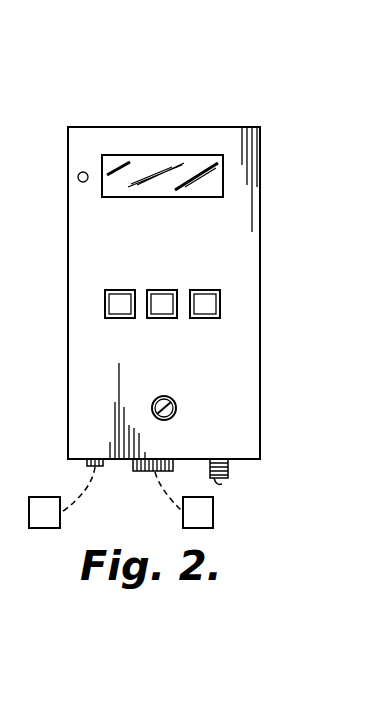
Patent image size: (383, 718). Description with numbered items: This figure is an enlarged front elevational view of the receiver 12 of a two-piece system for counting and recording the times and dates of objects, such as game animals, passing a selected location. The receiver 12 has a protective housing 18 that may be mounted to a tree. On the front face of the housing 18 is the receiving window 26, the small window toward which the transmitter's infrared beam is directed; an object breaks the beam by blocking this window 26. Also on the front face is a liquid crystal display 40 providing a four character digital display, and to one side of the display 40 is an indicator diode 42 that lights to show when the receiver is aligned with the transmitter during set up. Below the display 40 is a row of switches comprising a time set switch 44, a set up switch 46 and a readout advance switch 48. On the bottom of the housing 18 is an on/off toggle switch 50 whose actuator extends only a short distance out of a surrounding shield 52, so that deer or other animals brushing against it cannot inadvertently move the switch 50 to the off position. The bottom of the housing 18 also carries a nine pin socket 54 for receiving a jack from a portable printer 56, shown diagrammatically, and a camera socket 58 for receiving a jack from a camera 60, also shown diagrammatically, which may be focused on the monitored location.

The receiver 12 is at (192, 91).
The protective housing 18 is at (247, 352).
The receiving window 26 is at (177, 406).
The liquid crystal display 40 is at (198, 187).
The indicator diode 42 is at (79, 180).
The time set switch 44 is at (122, 318).
The set up switch 46 is at (164, 318).
The readout advance switch 48 is at (210, 318).
The on/off toggle switch 50 is at (222, 480).
The shield 52 is at (228, 468).
The nine pin socket 54 is at (140, 472).
The portable printer 56 is at (213, 522).
The camera socket 58 is at (85, 463).
The camera 60 is at (52, 528).